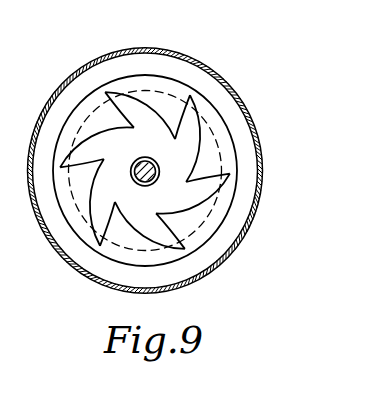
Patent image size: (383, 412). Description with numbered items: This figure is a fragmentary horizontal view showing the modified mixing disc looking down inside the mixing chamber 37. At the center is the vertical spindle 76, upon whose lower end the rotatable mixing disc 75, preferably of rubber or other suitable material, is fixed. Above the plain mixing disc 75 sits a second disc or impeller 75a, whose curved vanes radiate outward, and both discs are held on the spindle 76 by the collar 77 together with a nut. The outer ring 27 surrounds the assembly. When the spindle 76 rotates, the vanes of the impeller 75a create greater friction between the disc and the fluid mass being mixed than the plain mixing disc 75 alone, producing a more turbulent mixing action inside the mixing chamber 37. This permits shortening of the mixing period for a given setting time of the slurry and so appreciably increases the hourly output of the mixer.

The rope ring 27 is at (90, 59).
The mixing chamber 37 is at (65, 258).
The mixing disc 75 is at (207, 110).
The impeller 75a is at (173, 197).
The vertical spindle 76 is at (136, 162).
The collar 77 is at (160, 166).